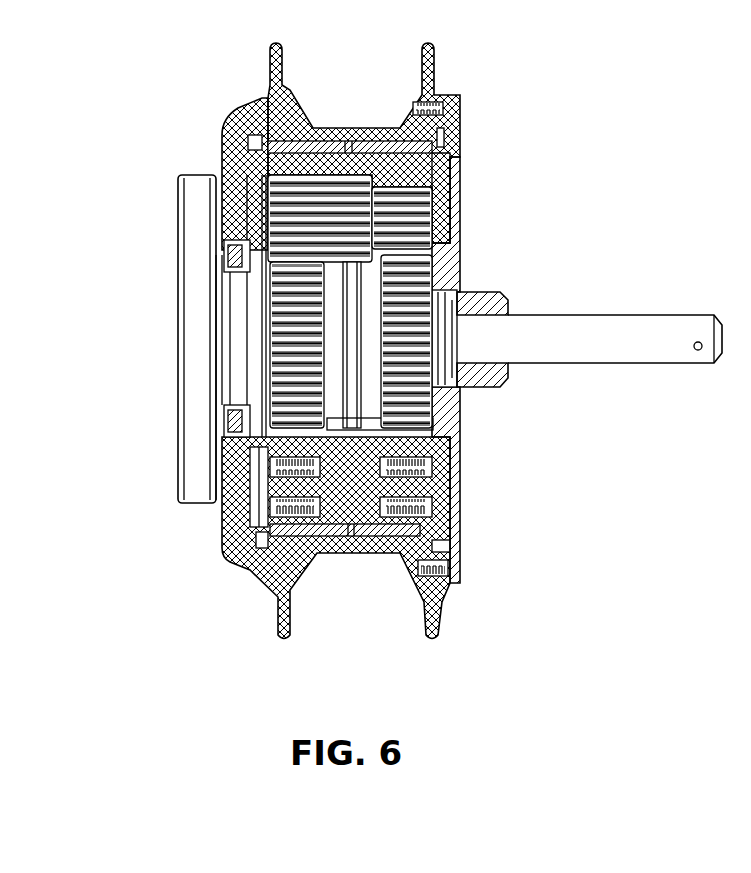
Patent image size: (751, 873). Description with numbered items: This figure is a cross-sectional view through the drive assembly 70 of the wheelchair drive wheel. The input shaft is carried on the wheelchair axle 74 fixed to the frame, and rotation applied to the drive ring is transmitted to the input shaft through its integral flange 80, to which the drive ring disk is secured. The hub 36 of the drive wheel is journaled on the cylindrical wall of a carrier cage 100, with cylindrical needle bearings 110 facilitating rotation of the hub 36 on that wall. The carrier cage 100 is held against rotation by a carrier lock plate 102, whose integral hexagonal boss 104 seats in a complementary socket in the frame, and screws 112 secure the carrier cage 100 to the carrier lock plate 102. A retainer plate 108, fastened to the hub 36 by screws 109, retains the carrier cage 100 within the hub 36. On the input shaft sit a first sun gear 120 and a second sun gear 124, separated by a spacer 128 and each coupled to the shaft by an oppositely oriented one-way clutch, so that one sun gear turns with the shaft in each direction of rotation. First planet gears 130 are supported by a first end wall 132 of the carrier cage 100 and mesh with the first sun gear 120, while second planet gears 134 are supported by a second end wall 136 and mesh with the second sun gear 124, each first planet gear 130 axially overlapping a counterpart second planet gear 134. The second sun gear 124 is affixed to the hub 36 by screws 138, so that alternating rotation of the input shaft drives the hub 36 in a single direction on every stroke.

The hub 36 is at (268, 574).
The drive assembly 70 is at (178, 444).
The wheelchair axle 74 is at (612, 326).
The flange 80 is at (205, 497).
The carrier cage 100 is at (382, 528).
The carrier lock plate 102 is at (455, 243).
The boss 104 is at (485, 380).
The retainer plate 108 is at (462, 530).
The screws 109 is at (445, 568).
The cylindrical needle bearings 110 is at (378, 143).
The screws 112 is at (455, 467).
The first sun gear 120 is at (375, 305).
The second sun gear 124 is at (330, 340).
The spacer 128 is at (350, 300).
The first planet gear 130 is at (413, 213).
The first end wall 132 is at (440, 173).
The second planet gear 134 is at (278, 203).
The second end wall 136 is at (250, 152).
The screws 138 is at (232, 257).